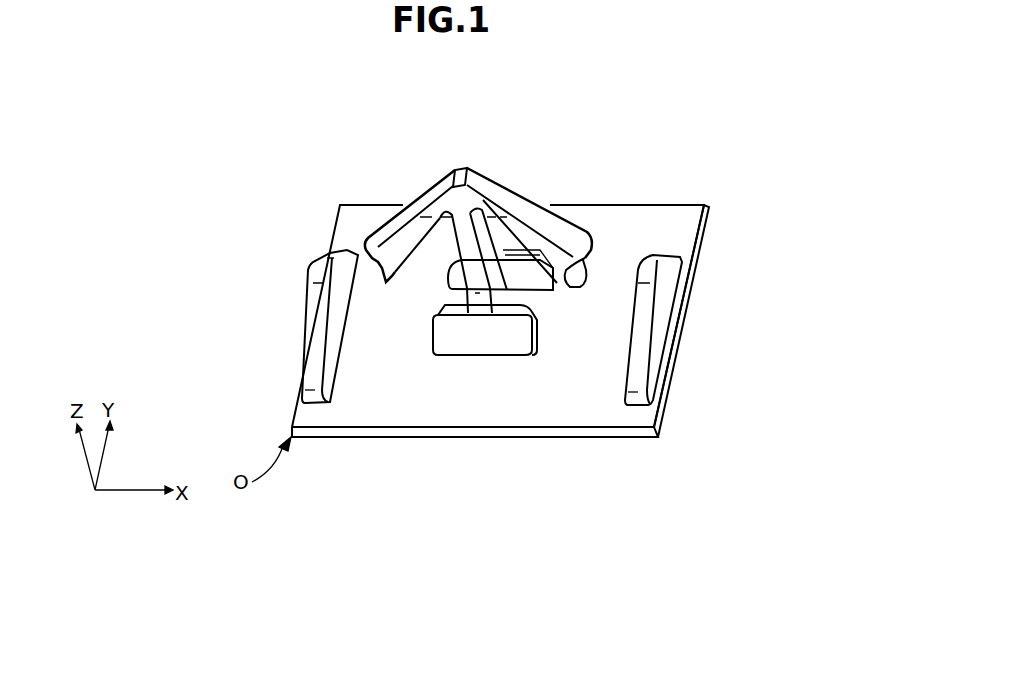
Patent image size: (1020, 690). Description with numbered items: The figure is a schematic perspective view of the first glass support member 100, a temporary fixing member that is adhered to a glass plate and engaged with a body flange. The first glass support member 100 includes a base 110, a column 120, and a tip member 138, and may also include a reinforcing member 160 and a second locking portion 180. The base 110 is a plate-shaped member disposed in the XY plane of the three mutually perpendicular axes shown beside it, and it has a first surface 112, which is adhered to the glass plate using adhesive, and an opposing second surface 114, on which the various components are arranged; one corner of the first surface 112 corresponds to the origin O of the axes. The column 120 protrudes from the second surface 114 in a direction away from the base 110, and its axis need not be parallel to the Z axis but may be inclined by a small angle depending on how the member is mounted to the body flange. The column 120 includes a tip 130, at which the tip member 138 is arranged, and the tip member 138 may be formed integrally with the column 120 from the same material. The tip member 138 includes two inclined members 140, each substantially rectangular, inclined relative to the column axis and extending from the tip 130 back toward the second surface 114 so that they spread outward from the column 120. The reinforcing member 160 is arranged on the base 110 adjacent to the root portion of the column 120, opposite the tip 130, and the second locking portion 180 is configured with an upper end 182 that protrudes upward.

The first glass support member 100 is at (703, 98).
The base 110 is at (675, 380).
The first surface 112 is at (603, 448).
The second surface 114 is at (398, 414).
The column 120 is at (462, 244).
The tip 130 is at (498, 222).
The tip member 138 is at (464, 160).
The inclined member 140 is at (413, 208).
The reinforcing member 160 is at (477, 340).
The second locking portion 180 is at (317, 313).
The upper end 182 is at (308, 270).